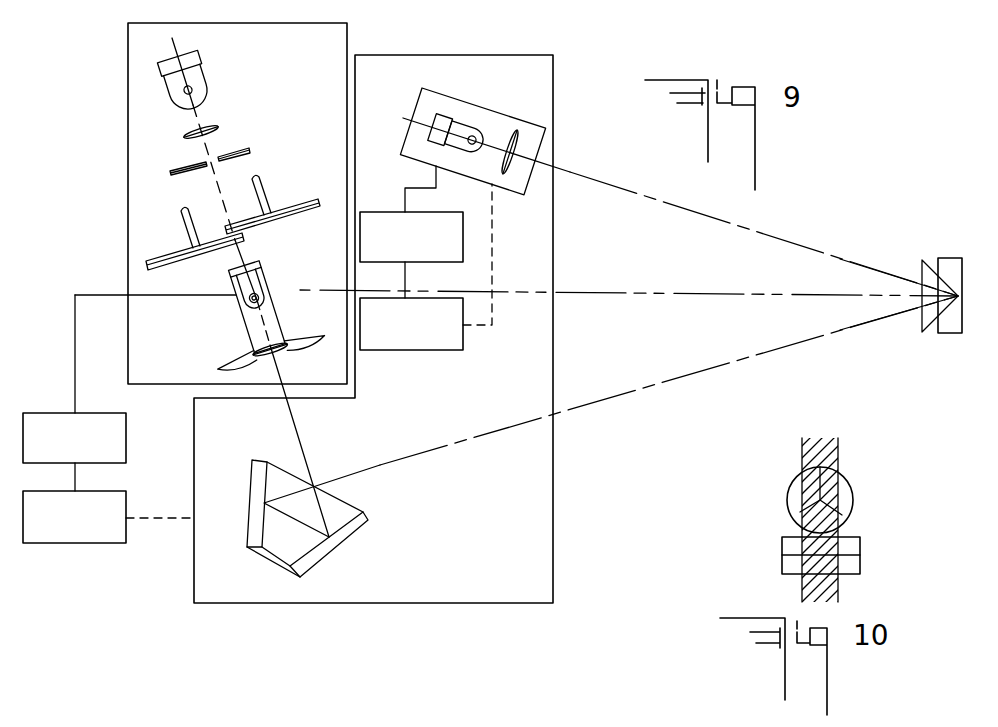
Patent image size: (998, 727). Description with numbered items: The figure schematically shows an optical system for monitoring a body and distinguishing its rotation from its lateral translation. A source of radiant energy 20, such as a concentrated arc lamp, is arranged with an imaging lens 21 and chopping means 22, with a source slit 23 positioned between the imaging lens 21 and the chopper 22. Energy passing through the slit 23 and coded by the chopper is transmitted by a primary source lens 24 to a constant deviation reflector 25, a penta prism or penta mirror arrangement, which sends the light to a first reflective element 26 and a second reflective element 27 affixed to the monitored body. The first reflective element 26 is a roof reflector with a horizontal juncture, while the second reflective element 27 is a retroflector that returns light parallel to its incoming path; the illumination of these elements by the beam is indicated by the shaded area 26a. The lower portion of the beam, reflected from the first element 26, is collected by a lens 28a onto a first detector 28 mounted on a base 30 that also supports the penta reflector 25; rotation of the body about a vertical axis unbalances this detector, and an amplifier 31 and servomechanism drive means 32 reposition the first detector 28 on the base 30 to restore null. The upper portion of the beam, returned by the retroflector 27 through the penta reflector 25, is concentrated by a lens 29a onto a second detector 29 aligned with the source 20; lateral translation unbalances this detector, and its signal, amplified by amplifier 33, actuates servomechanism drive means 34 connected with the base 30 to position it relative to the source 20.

In FIG. 9, the source of radiant energy 20 is at (202, 73).
In FIG. 9, the imaging lens 21 is at (212, 127).
In FIG. 9, the chopping means 22 is at (252, 232).
In FIG. 9, the source slit 23 is at (250, 148).
In FIG. 9, the primary source lens 24 is at (228, 364).
In FIG. 9, the constant deviation reflector 25 is at (248, 489).
In FIG. 9, the first reflective element 26 is at (955, 258).
In FIG. 10, the first reflective element 26 is at (862, 548).
In FIG. 10, the shaded area 26a is at (840, 448).
In FIG. 9, the second reflective element 27 is at (927, 260).
In FIG. 10, the second reflective element 27 is at (852, 488).
In FIG. 9, the first detector 28 is at (460, 122).
In FIG. 9, the lens 28a is at (517, 130).
In FIG. 9, the second detector 29 is at (262, 286).
In FIG. 9, the lens 29a is at (275, 356).
In FIG. 9, the base 30 is at (553, 242).
In FIG. 9, the amplifier 31 is at (428, 211).
In FIG. 9, the servomechanism drive means 32 is at (417, 298).
In FIG. 9, the amplifier 33 is at (97, 413).
In FIG. 9, the servomechanism drive means 34 is at (97, 491).